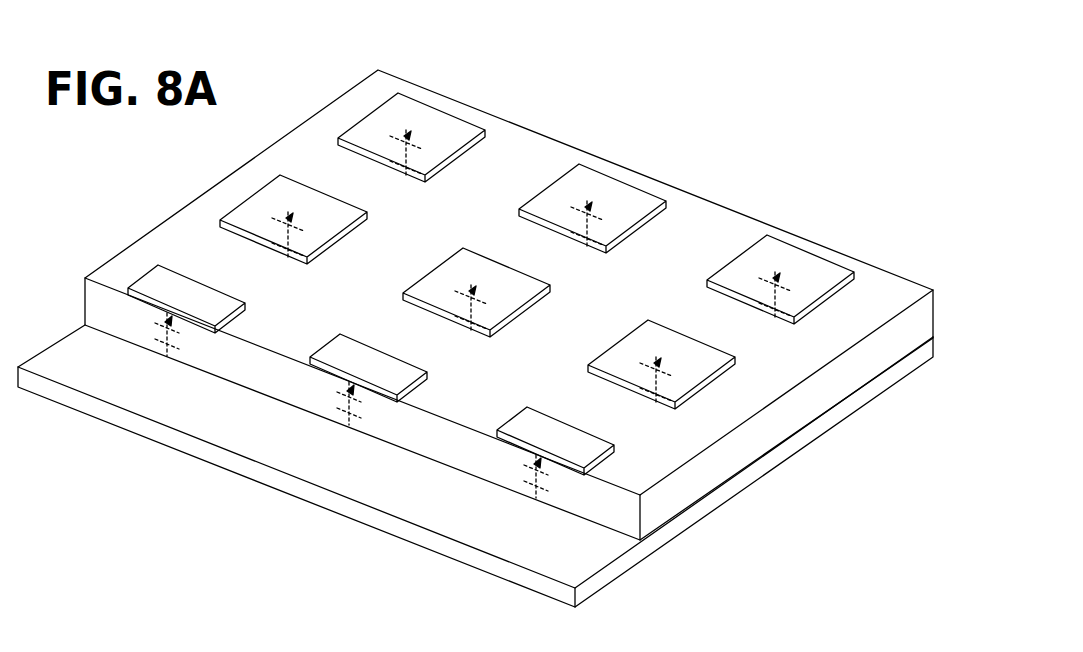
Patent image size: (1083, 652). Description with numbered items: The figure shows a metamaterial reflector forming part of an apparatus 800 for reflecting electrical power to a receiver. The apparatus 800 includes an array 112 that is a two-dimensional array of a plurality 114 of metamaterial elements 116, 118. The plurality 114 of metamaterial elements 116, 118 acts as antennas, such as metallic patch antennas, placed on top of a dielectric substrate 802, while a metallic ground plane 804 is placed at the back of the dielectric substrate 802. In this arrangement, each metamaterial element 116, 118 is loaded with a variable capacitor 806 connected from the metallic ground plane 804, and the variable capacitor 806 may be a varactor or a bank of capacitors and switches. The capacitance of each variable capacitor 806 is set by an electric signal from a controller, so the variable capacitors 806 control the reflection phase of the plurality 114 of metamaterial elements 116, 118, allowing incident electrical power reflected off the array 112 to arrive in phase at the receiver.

The apparatus 800 is at (745, 67).
The dielectric substrate 802 is at (168, 232).
The metallic ground plane 804 is at (83, 383).
The variable capacitor 806 is at (358, 425).
The array 112 is at (745, 198).
The plurality of metamaterial elements 114 is at (566, 186).
The metamaterial element 116 is at (382, 118).
The metamaterial element 118 is at (632, 202).